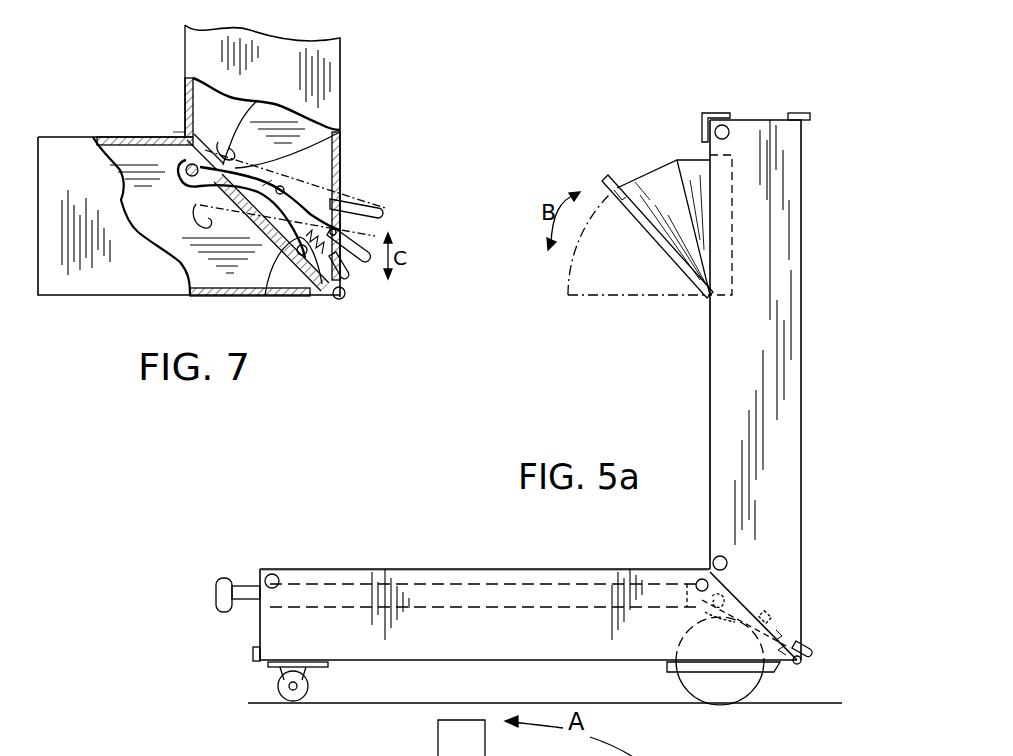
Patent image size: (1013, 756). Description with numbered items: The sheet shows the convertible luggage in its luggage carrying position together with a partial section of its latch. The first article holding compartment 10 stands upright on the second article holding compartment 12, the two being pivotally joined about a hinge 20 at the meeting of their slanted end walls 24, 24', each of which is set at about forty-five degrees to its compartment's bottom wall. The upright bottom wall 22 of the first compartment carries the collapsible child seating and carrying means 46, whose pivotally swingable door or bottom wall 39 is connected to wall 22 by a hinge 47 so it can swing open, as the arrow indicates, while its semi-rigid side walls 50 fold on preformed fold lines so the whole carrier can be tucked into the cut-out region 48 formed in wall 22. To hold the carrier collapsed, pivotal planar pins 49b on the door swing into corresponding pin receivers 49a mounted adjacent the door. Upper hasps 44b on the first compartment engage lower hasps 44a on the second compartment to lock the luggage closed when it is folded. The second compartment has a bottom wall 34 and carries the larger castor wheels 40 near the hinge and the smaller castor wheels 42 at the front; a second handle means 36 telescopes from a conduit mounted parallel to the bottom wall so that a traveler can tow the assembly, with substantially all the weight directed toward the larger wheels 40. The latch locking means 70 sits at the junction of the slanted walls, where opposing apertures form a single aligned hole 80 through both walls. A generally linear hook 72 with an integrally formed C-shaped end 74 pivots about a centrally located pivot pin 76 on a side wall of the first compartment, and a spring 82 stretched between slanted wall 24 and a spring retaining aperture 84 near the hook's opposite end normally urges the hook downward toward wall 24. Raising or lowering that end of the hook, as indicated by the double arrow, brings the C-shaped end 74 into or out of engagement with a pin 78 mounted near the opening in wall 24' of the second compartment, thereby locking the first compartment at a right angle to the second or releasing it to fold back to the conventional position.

In FIG. 7, the first article holding compartment 10 is at (348, 56).
In FIG. 5A, the first article holding compartment 10 is at (797, 323).
In FIG. 7, the second article holding compartment 12 is at (94, 298).
In FIG. 5A, the second article holding compartment 12 is at (478, 652).
In FIG. 7, the hinge 20 is at (346, 295).
In FIG. 5A, the hinge 20 is at (803, 662).
In FIG. 5A, the bottom wall 22 is at (712, 386).
In FIG. 7, the slanted end wall 24 is at (302, 231).
In FIG. 7, the slanted end wall 24' is at (287, 290).
In FIG. 5A, the bottom wall 34 is at (483, 568).
In FIG. 5A, the second handle means 36 is at (210, 584).
In FIG. 5A, the pivotally swingable door 39 is at (652, 234).
In FIG. 5A, the castor wheels 40 is at (745, 681).
In FIG. 5A, the castor wheels 42 is at (300, 692).
In FIG. 5A, the lower hasps 44a is at (252, 655).
In FIG. 5A, the upper hasps 44b is at (800, 115).
In FIG. 5A, the child seating and carrying means 46 is at (640, 162).
In FIG. 5A, the hinge 47 is at (708, 298).
In FIG. 5A, the cut-out region 48 is at (728, 188).
In FIG. 5A, the pin receivers 49a is at (716, 113).
In FIG. 5A, the pivotal planar pins 49b is at (602, 181).
In FIG. 5A, the side walls 50 is at (663, 168).
In FIG. 7, the latch locking means 70 is at (170, 126).
In FIG. 5A, the latch locking means 70 is at (788, 608).
In FIG. 7, the hook 72 is at (278, 177).
In FIG. 5A, the hook 72 is at (812, 642).
In FIG. 7, the C-shaped end 74 is at (186, 184).
In FIG. 7, the pivot pin 76 is at (320, 181).
In FIG. 7, the pin 78 is at (254, 118).
In FIG. 7, the aligned hole 80 is at (200, 130).
In FIG. 7, the spring 82 is at (300, 294).
In FIG. 7, the spring retaining aperture 84 is at (352, 228).